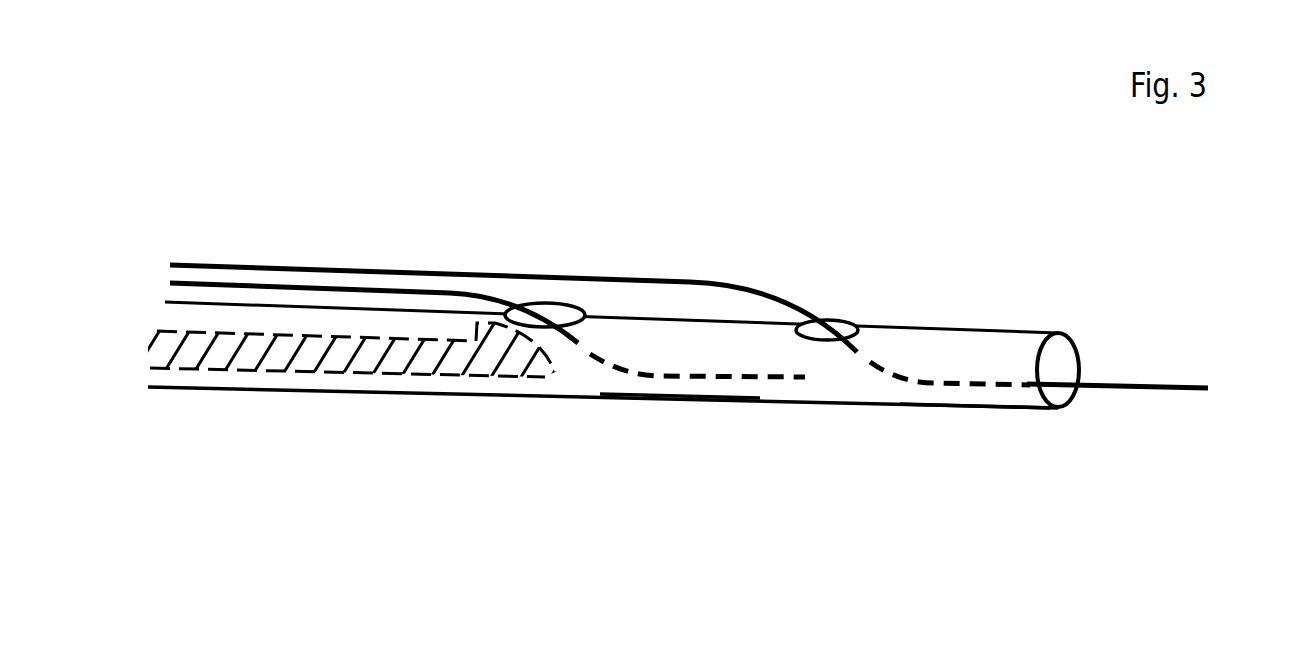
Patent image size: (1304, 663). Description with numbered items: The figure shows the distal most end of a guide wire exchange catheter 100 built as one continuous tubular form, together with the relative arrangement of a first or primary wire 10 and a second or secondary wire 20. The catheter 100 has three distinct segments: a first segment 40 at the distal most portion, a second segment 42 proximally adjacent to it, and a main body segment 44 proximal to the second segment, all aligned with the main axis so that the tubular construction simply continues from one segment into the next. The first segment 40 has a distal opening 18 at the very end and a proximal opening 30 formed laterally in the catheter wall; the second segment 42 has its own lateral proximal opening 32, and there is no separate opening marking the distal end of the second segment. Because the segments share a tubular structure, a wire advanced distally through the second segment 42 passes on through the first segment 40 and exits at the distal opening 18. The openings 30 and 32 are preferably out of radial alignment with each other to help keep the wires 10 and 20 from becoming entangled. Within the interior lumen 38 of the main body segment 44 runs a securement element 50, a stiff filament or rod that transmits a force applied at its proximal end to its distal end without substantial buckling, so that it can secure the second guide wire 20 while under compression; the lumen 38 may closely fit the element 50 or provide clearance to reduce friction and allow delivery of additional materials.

The exchange catheter 100 is at (322, 222).
The first or primary wire 10 is at (769, 278).
The second or secondary wire 20 is at (490, 288).
The proximal opening of first segment 30 is at (845, 320).
The proximal opening of second segment 32 is at (568, 300).
The distal opening 18 is at (1060, 353).
The interior lumen 38 is at (512, 390).
The first segment 40 is at (999, 412).
The second segment 42 is at (717, 405).
The main body segment 44 is at (358, 402).
The securement element 50 is at (295, 348).